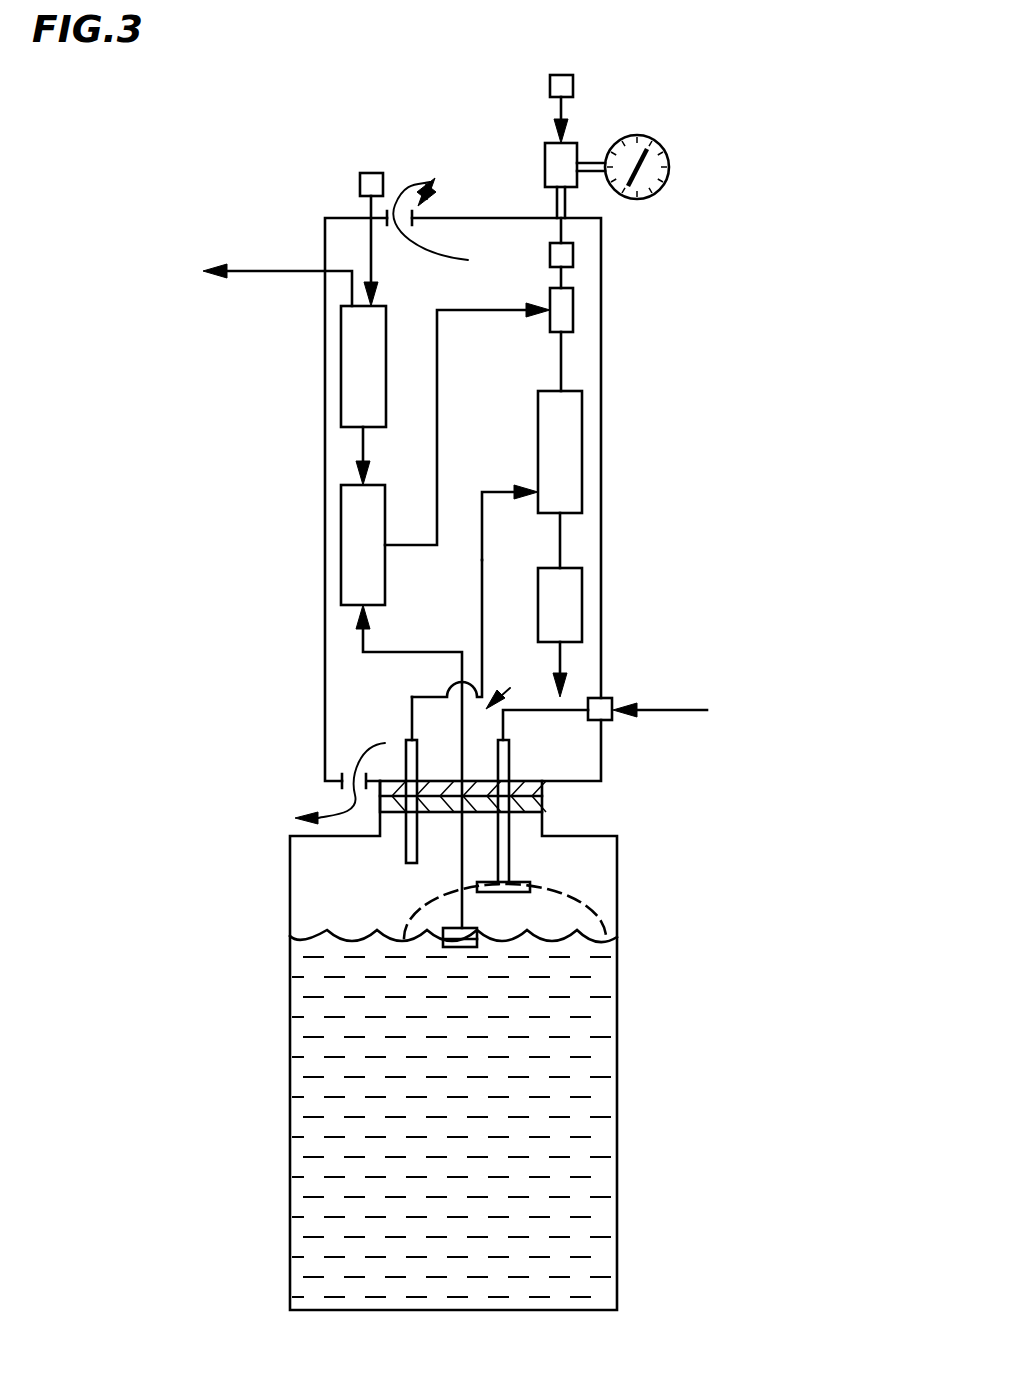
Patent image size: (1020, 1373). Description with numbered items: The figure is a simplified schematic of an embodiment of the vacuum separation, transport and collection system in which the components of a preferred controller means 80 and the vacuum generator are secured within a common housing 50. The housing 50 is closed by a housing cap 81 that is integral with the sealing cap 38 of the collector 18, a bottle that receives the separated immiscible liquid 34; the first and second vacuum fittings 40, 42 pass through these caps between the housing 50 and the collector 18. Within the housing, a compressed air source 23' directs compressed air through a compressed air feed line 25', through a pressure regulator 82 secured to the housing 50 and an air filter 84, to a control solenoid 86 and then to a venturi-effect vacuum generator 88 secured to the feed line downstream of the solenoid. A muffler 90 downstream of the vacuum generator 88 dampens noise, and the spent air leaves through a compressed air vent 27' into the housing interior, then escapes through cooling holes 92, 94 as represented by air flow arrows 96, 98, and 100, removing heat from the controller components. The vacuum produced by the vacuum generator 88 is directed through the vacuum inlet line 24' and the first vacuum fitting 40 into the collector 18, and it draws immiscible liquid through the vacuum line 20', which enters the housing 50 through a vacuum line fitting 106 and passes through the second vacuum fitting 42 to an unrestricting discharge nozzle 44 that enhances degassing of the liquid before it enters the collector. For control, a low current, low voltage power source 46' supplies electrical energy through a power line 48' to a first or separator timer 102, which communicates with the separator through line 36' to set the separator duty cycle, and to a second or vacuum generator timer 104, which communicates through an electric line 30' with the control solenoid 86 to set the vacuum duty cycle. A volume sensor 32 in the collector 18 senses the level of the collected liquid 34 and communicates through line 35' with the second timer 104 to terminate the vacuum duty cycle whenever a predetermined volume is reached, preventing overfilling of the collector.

The collector 18 is at (290, 1078).
The vacuum line 20' is at (699, 697).
The compressed air source 23' is at (609, 54).
The vacuum inlet line 24' is at (513, 533).
The compressed air feed line 25' is at (626, 157).
The compressed air vent 27' is at (621, 664).
The electric line 30' is at (467, 465).
The volume sensor 32 is at (446, 944).
The immiscible liquid 34 is at (328, 1210).
The line 35' is at (358, 766).
The line 36' is at (277, 308).
The sealing cap 38 is at (545, 812).
The first vacuum fitting 40 is at (405, 746).
The second vacuum fitting 42 is at (509, 768).
The unrestricting discharge nozzle 44 is at (530, 882).
The power source 46' is at (348, 145).
The power line 48' is at (307, 251).
The housing 50 is at (603, 400).
The controller means 80 is at (461, 426).
The housing cap 81 is at (544, 796).
The pressure regulator 82 is at (668, 165).
The air filter 84 is at (565, 256).
The control solenoid 86 is at (558, 312).
The venturi-effect vacuum generator 88 is at (562, 447).
The muffler 90 is at (572, 603).
The cooling hole 92 is at (322, 793).
The cooling hole 94 is at (445, 188).
The air flow arrow 96 is at (558, 697).
The air flow arrow 98 is at (385, 744).
The air flow arrow 100 is at (450, 250).
The first or separator timer 102 is at (352, 370).
The second or vacuum generator timer 104 is at (353, 547).
The vacuum line fitting 106 is at (612, 720).